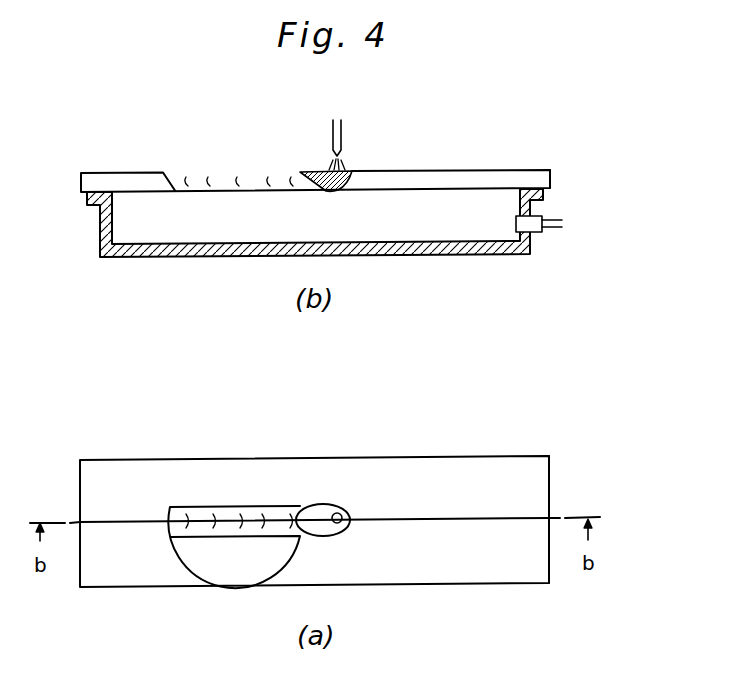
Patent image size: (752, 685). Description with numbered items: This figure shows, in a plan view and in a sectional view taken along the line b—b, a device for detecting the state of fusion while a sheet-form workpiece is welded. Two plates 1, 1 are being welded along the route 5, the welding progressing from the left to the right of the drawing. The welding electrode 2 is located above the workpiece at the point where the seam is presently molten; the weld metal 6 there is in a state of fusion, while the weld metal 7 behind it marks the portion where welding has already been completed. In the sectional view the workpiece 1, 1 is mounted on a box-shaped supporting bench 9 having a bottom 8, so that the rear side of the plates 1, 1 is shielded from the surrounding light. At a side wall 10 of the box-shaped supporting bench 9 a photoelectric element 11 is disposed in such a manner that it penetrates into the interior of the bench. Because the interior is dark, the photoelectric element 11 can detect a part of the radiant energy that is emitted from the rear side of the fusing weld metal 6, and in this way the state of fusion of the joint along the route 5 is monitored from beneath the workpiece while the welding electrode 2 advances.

The plate 1 is at (517, 170).
The welding electrode 2 is at (341, 125).
The route 5 is at (457, 178).
The weld metal in a state of fusion 6 is at (312, 172).
The weld metal 7 is at (203, 182).
The bottom 8 is at (220, 257).
The box-shaped supporting bench 9 is at (98, 254).
The side wall 10 is at (534, 206).
The photoelectric element 11 is at (538, 233).